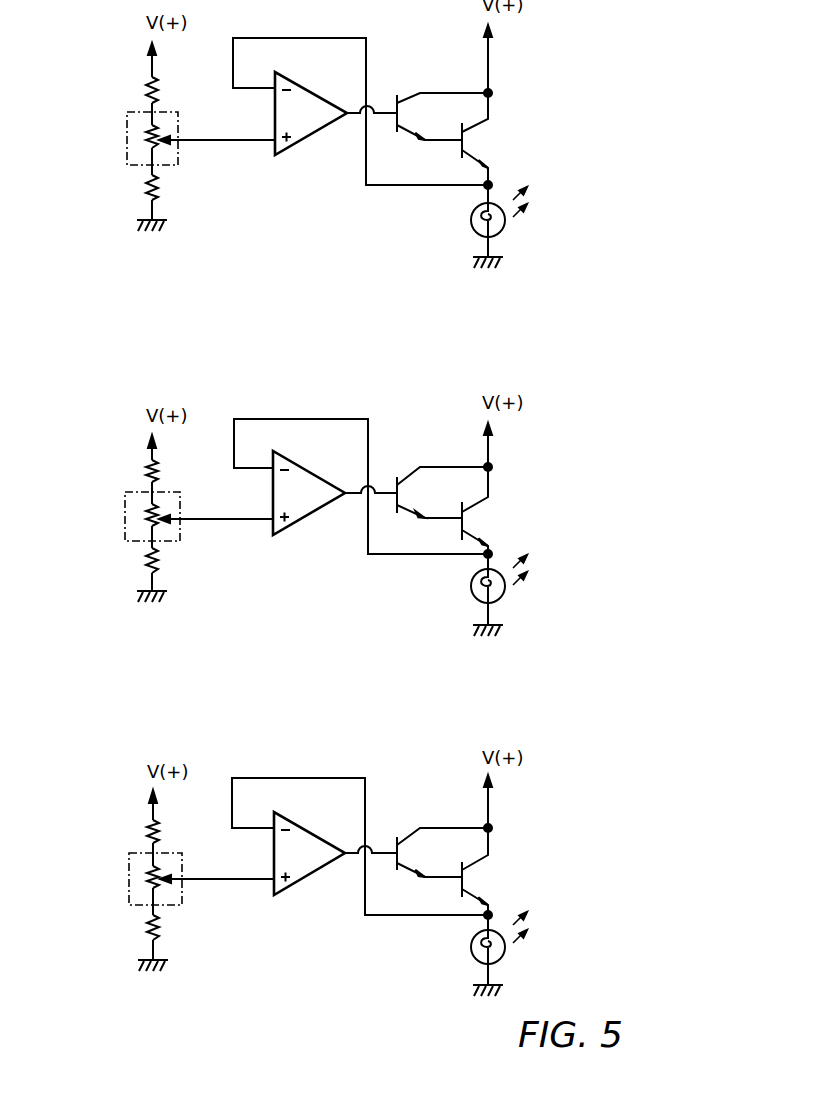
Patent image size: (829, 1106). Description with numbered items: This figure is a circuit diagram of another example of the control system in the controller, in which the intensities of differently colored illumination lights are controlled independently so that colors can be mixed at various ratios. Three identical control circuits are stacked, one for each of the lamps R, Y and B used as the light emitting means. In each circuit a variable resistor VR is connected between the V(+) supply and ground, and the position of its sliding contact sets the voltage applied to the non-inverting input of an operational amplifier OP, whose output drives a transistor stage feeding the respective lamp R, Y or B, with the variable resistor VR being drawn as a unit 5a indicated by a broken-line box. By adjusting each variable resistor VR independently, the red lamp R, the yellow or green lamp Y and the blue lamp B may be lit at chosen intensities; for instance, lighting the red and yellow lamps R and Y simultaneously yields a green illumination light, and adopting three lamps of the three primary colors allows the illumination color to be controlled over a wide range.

The variable resistor (potentiometer) unit 5a is at (178, 164).
The variable resistor VR is at (120, 508).
The operational amplifier OP is at (310, 483).
The red lamp R is at (510, 212).
The yellow lamp Y is at (537, 579).
The blue lamp B is at (512, 938).